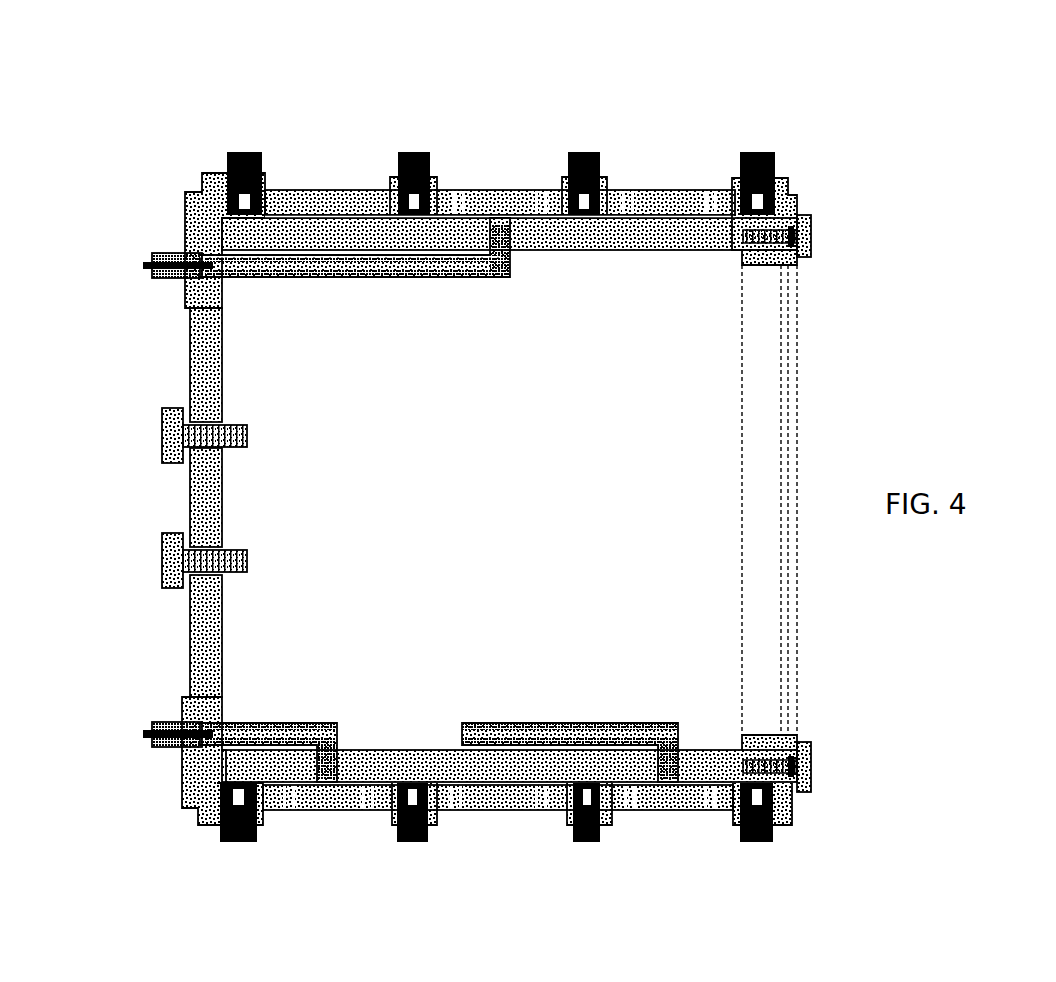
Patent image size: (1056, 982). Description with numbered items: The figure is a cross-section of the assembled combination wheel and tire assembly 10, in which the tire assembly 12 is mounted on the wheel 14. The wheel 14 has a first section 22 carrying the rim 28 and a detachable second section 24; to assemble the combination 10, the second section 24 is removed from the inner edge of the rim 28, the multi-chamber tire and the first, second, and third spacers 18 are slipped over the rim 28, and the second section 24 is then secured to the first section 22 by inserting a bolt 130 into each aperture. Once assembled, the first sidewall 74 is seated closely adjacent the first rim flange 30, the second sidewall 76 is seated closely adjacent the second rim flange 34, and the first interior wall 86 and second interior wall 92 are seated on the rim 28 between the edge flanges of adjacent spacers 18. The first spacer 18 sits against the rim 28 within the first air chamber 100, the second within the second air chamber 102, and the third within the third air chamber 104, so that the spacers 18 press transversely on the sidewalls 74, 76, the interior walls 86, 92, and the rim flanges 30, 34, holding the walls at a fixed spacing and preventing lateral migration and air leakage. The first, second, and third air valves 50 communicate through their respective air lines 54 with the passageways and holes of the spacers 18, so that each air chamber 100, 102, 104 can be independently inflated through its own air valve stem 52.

The combination wheel and tire assembly 10 is at (939, 265).
The tire assembly 12 is at (422, 71).
The wheel 14 is at (177, 353).
The spacers 18 is at (349, 184).
The first section 22 is at (183, 652).
The second section 24 is at (777, 463).
The rim 28 is at (578, 265).
The first rim flange 30 is at (200, 161).
The second rim flange 34 is at (792, 173).
The air valves 50 is at (443, 304).
The air valve stems 52 is at (146, 293).
The air lines 54 is at (351, 280).
The first sidewall 74 is at (246, 150).
The second sidewall 76 is at (764, 144).
The first interior wall 86 is at (428, 150).
The second interior wall 92 is at (601, 144).
The first air chamber 100 is at (390, 138).
The second air chamber 102 is at (545, 130).
The third air chamber 104 is at (735, 135).
The bolt 130 is at (812, 233).